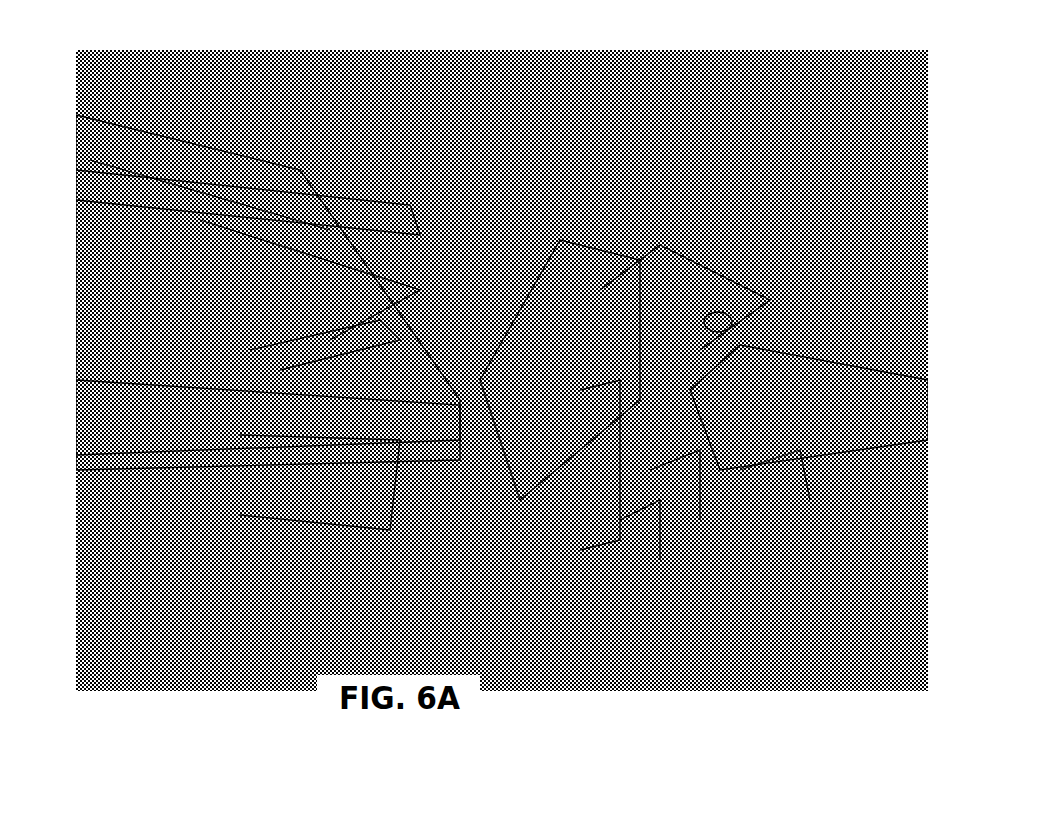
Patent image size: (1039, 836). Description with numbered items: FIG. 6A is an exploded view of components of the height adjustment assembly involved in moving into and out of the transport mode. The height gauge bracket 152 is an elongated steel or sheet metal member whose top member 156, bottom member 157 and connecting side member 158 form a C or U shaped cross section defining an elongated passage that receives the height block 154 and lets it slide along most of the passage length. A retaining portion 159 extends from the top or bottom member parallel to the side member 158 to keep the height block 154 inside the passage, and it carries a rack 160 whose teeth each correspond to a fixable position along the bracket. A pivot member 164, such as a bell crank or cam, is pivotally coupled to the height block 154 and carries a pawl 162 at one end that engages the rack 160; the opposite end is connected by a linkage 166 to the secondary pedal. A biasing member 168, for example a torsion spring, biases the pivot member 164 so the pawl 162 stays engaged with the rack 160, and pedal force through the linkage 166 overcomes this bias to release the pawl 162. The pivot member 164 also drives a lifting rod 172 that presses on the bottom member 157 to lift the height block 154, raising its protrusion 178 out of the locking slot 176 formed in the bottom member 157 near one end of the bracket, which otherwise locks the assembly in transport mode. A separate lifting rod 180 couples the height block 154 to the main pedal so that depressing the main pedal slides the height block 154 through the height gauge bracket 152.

The height gauge bracket 152 is at (258, 237).
The height block 154 is at (595, 251).
The top member 156 is at (310, 175).
The bottom member 157 is at (236, 481).
The side member 158 is at (343, 336).
The retaining portion 159 is at (267, 130).
The rack 160 is at (210, 117).
The pawl 162 is at (685, 188).
The pivot member 164 is at (800, 285).
The linkage 166 is at (809, 463).
The biasing member 168 is at (582, 554).
The lifting rod 172 is at (736, 592).
The locking slot 176 is at (263, 579).
The protrusion 178 is at (627, 641).
The lifting rod 180 is at (829, 587).